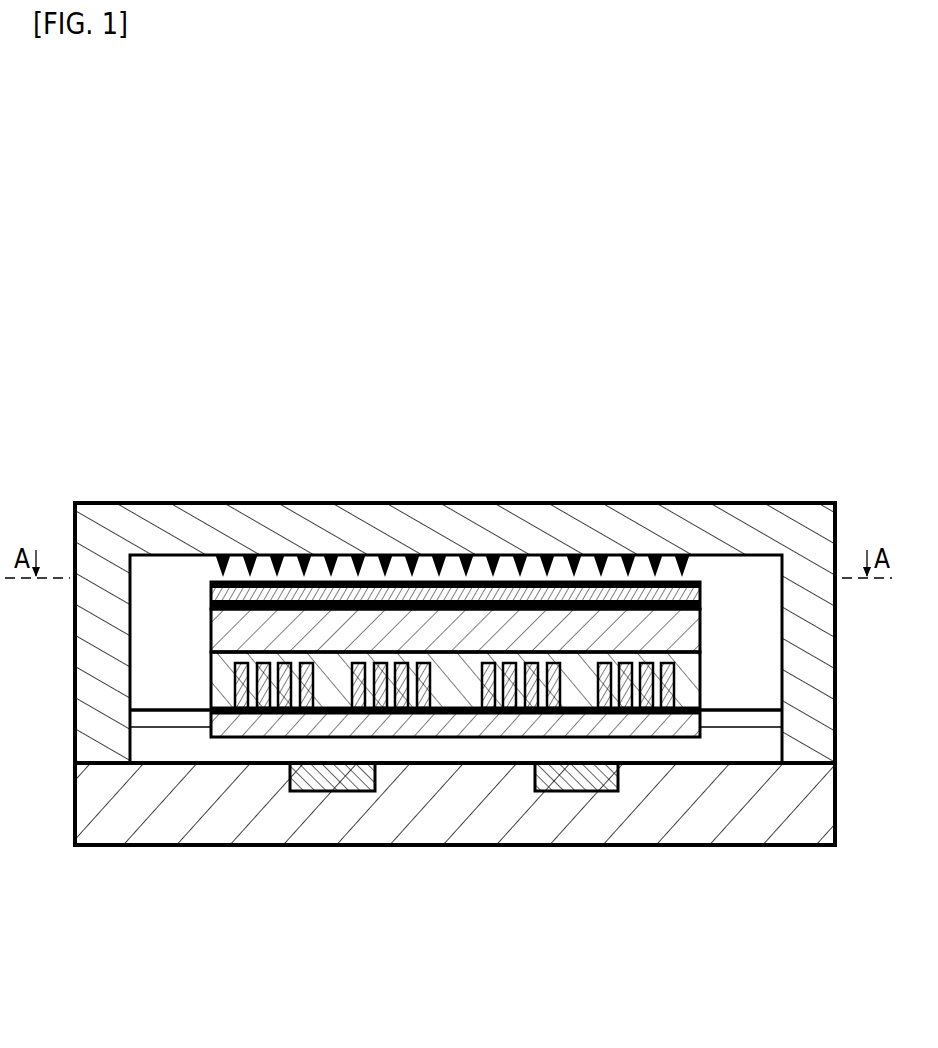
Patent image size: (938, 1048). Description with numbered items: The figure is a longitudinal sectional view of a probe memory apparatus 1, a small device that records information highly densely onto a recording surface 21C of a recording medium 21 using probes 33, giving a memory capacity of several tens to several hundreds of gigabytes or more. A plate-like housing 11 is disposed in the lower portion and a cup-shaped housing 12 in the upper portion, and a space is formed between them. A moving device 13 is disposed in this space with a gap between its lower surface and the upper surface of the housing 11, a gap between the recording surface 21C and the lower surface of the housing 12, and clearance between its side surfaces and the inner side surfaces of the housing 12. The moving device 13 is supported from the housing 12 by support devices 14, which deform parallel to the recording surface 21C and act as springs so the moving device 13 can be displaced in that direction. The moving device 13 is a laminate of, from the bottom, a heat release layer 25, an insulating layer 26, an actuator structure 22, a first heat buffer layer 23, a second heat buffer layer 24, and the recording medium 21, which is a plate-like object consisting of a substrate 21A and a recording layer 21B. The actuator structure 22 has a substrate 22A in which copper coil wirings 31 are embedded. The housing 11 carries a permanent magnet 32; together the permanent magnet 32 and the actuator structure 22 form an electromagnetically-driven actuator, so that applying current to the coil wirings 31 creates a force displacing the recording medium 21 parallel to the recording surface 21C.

The probe memory apparatus 1 is at (677, 460).
The plate-like housing 11 is at (412, 845).
The cup-shaped housing 12 is at (420, 503).
The moving device 13 is at (703, 565).
The support device 14 is at (165, 727).
The recording medium 21 is at (700, 583).
The substrate 21A is at (211, 593).
The recording layer 21B is at (211, 584).
The recording surface 21C is at (484, 580).
The actuator structure 22 is at (700, 668).
The substrate 22A is at (211, 666).
The first heat buffer layer 23 is at (700, 640).
The second heat buffer layer 24 is at (700, 603).
The heat release layer 25 is at (470, 737).
The insulating layer 26 is at (211, 703).
The coil wirings 31 is at (677, 693).
The permanent magnet 32 is at (325, 791).
The probes 33 is at (293, 565).